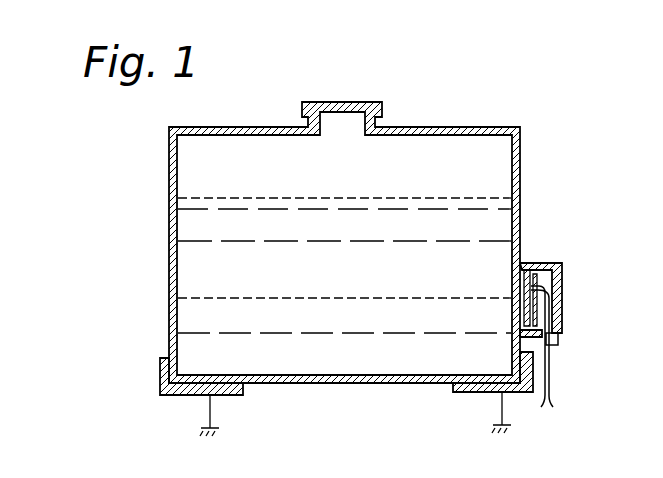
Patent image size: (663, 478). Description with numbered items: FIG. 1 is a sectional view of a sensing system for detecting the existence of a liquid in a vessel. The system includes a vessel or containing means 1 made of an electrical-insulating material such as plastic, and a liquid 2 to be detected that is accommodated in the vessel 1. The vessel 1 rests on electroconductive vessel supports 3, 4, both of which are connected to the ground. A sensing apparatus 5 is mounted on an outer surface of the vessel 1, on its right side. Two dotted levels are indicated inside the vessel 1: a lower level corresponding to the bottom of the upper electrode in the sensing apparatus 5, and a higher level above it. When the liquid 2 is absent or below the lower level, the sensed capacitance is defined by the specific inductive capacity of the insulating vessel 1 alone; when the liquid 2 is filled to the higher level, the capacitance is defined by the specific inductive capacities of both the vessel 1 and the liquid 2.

The vessel 1 is at (453, 127).
The liquid 2 is at (500, 222).
The vessel support 3 is at (181, 398).
The vessel support 4 is at (468, 393).
The sensing apparatus 5 is at (563, 268).